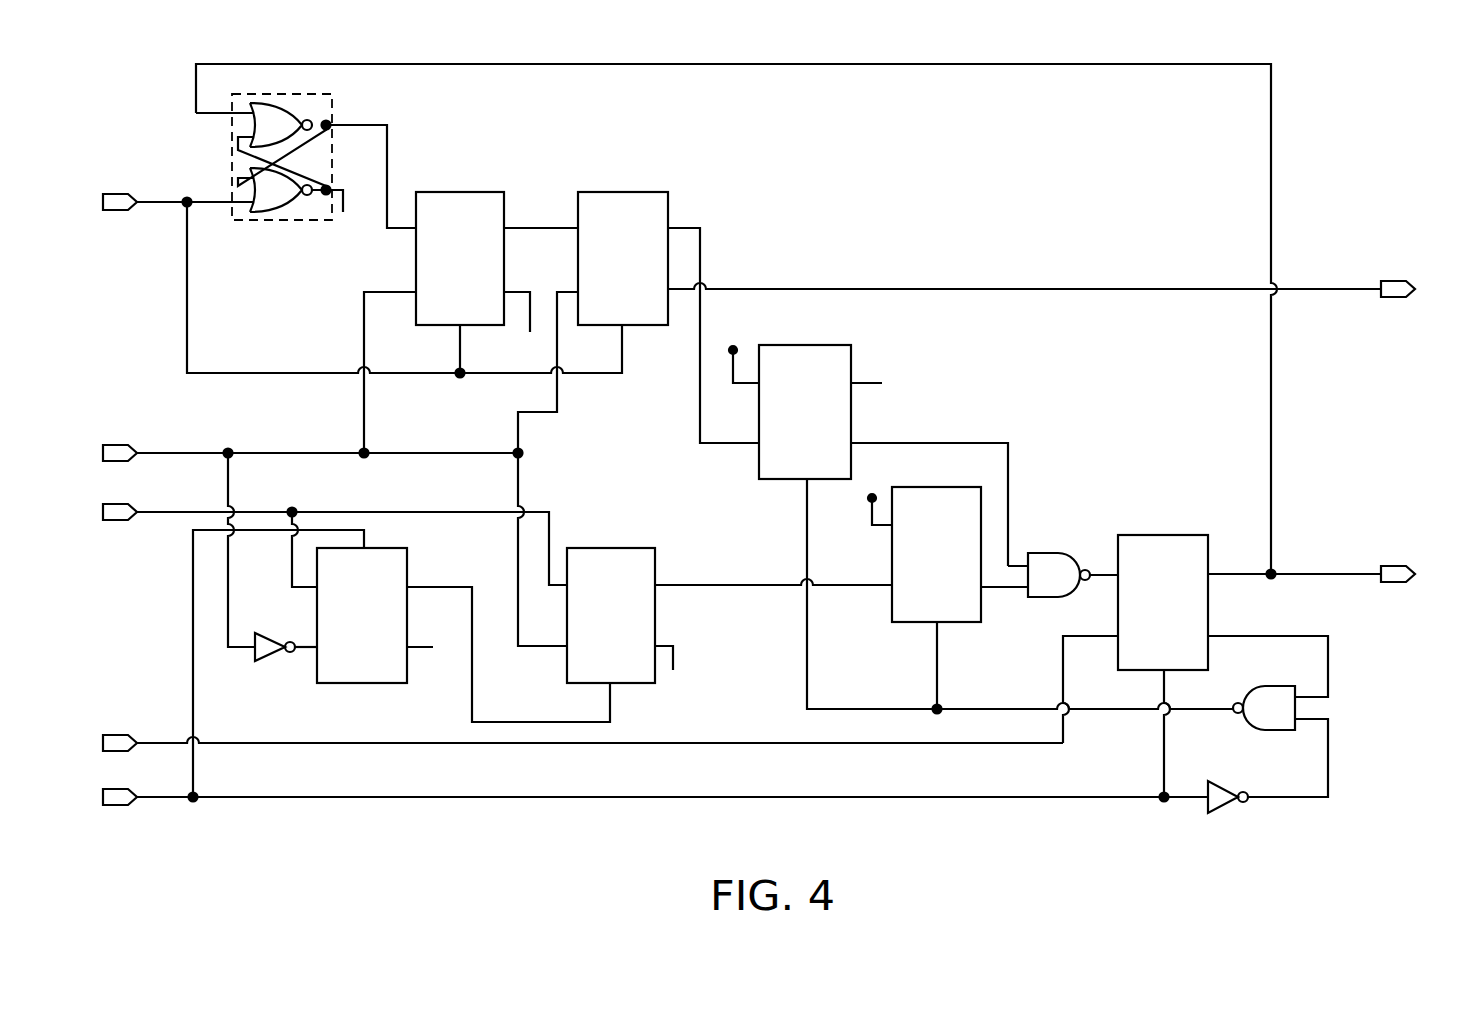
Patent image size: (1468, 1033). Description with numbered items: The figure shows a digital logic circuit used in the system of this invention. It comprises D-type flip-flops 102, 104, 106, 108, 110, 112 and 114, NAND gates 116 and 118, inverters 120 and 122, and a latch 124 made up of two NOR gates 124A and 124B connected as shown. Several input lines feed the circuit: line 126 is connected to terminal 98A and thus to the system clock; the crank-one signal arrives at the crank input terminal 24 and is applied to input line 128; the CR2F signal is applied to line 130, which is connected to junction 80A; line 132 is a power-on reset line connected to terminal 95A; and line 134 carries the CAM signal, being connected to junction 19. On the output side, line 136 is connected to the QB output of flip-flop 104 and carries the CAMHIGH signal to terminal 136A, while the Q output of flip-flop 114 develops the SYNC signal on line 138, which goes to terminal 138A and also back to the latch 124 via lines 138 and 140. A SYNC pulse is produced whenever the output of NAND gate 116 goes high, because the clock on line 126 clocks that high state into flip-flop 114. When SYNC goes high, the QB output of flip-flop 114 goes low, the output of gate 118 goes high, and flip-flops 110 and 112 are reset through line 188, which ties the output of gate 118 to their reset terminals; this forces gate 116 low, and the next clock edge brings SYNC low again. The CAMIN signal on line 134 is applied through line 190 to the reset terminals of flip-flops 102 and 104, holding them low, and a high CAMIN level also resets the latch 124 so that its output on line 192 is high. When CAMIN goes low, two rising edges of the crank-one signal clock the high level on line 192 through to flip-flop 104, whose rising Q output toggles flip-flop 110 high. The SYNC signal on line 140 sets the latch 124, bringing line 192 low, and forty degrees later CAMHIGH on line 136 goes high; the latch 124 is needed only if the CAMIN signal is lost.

The junction 19 is at (125, 197).
The CRANK input terminal 24 is at (118, 445).
The junction 80A is at (125, 515).
The terminal 98A is at (120, 737).
The terminal 95A is at (113, 805).
The D-type flip-flop 102 is at (455, 192).
The D-type flip-flop 104 is at (610, 192).
The D-type flip-flop 106 is at (383, 548).
The D-type flip-flop 108 is at (625, 548).
The D-type flip-flop 110 is at (835, 345).
The D-type flip-flop 112 is at (915, 627).
The D-type flip-flop 114 is at (1160, 535).
The NAND gate 116 is at (1068, 557).
The NAND gate 118 is at (1268, 688).
The inverter 120 is at (1222, 808).
The inverter 122 is at (273, 637).
The latch 124 is at (314, 153).
The NOR gate 124A is at (275, 112).
The NOR gate 124B is at (283, 193).
The line 126 is at (168, 742).
The input line 128 is at (197, 453).
The line 130 is at (172, 513).
The power-on reset line 132 is at (160, 798).
The line 134 is at (157, 200).
The line 136 is at (870, 289).
The terminal 136A is at (1395, 294).
The line 138 is at (1313, 573).
The terminal 138A is at (1400, 580).
The line 140 is at (565, 66).
The line 188 is at (965, 709).
The line 190 is at (230, 373).
The line 192 is at (387, 182).